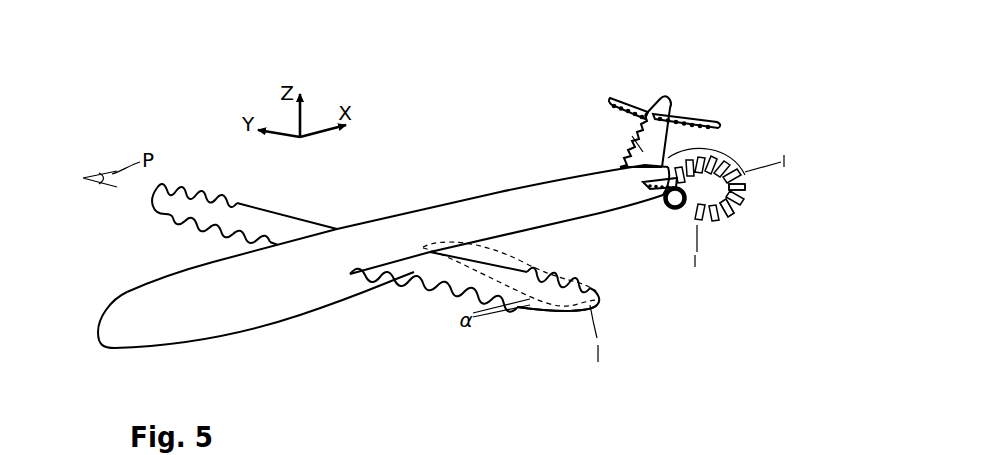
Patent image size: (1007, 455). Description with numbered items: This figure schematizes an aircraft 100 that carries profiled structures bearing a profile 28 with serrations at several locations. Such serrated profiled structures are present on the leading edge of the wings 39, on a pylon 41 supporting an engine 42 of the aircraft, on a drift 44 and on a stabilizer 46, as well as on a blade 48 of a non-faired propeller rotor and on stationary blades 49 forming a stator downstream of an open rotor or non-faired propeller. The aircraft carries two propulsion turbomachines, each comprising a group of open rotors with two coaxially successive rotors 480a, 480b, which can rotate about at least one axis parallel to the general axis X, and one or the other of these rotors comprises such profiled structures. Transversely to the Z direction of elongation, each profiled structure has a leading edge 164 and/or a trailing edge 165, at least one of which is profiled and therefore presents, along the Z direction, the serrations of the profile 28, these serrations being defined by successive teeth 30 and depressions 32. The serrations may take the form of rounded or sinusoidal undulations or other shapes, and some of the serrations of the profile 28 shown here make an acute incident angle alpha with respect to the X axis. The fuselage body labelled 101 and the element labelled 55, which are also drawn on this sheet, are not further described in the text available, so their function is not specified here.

The aircraft 100 is at (274, 335).
The fuselage 101 is at (483, 223).
The wings 39 is at (240, 217).
The teeth 30 is at (513, 311).
The trailing edge 165 is at (198, 180).
The leading edge 164 is at (213, 240).
The profile with serrations 28 is at (233, 200).
The drift 44 is at (630, 147).
The stabilizer 46 is at (627, 102).
The pylon 41 is at (673, 152).
The engine 42 is at (745, 178).
The stationary blades 49 is at (746, 200).
The blade 48 is at (716, 212).
The rotor 480a is at (718, 224).
The rotor 480b is at (740, 214).
The component 55 is at (328, 452).
The depressions 32 is at (434, 441).